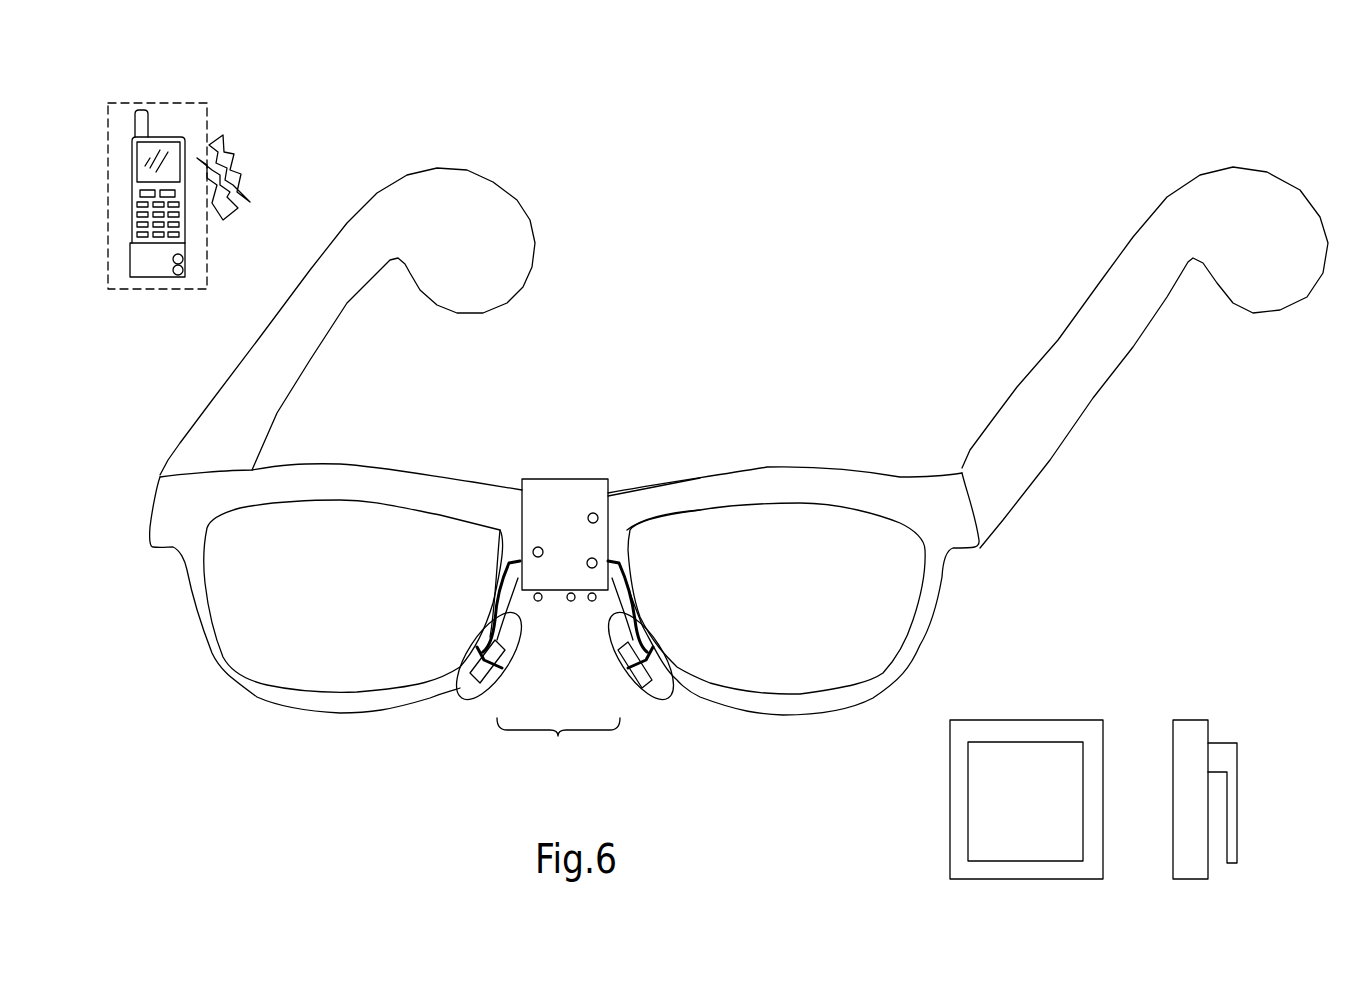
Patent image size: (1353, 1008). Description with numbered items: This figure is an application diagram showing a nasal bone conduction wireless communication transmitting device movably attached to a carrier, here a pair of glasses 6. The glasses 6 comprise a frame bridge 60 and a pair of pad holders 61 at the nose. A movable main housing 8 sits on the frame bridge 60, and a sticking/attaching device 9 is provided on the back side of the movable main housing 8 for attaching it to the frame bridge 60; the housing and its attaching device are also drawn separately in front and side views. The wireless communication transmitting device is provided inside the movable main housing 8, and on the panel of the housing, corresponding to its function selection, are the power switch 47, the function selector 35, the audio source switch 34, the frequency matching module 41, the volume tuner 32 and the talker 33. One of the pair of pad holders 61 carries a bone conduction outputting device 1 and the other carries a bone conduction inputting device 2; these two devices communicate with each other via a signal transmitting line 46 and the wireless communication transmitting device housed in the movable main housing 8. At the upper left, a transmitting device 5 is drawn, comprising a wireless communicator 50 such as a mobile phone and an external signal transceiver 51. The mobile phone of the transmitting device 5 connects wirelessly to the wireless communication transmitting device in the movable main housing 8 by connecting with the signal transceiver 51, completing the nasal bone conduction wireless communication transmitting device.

The bone conduction outputting device 1 is at (487, 690).
The bone conduction inputting device 2 is at (634, 690).
The transmitting device 5 is at (161, 160).
The pair of glasses 6 is at (1097, 397).
The movable main housing 8 is at (558, 512).
The sticking/attaching device 9 is at (997, 805).
The volume tuner 32 is at (540, 603).
The talker 33 is at (533, 553).
The audio source switch 34 is at (593, 603).
The function selector 35 is at (598, 563).
The frequency matching module 41 is at (570, 603).
The signal transmitting line 46 is at (640, 660).
The power switch 47 is at (596, 515).
The wireless communicator 50 is at (175, 145).
The external signal transceiver 51 is at (140, 263).
The frame bridge 60 is at (513, 510).
The pair of pad holders 61 is at (558, 742).